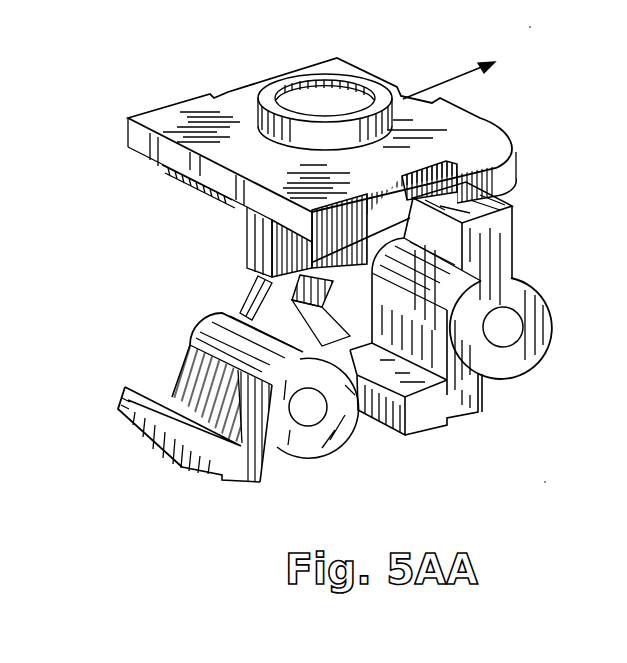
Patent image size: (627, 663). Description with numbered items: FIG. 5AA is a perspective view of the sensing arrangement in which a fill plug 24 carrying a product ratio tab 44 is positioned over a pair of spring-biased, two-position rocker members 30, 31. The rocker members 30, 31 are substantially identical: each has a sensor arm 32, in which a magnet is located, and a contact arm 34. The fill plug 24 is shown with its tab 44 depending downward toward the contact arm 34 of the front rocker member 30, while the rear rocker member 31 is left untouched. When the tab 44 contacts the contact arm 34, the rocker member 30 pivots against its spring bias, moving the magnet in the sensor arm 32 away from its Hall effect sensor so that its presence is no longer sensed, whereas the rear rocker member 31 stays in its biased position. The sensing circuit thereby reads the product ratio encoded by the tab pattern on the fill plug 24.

The fill plug 24 is at (482, 124).
The tab 44 is at (262, 240).
The contact arm 34 is at (268, 296).
The rocker member 30 is at (217, 343).
The sensor arm 32 is at (123, 402).
The rocker member 31 is at (554, 323).